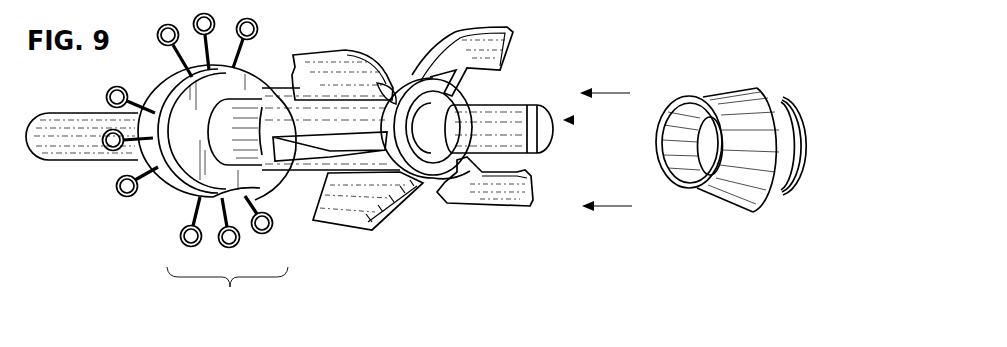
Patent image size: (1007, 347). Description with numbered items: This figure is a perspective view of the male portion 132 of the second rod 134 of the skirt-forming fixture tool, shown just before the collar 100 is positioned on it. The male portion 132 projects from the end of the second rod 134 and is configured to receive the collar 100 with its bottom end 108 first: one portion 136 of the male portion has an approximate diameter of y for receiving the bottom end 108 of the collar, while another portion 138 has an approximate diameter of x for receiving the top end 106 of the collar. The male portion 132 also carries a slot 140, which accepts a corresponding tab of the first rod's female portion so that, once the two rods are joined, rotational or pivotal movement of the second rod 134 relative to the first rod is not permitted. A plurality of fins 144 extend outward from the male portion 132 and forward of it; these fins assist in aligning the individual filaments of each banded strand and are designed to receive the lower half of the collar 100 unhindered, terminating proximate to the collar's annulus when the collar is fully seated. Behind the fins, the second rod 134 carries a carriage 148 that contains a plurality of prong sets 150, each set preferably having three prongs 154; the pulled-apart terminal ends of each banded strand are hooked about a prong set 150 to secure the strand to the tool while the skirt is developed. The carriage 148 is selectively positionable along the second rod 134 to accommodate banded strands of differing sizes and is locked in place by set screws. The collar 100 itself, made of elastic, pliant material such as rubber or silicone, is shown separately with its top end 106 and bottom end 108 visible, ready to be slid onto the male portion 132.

The collar 100 is at (745, 157).
The top end 106 is at (812, 175).
The bottom end 108 is at (670, 100).
The male portion 132 is at (576, 119).
The second rod 134 is at (72, 162).
The portion having an approximate diameter of y 136 is at (423, 98).
The portion having an approximate diameter of x 138 is at (478, 97).
The slot 140 is at (545, 148).
The fins 144 is at (467, 30).
The carriage 148 is at (175, 195).
The prong sets 150 is at (227, 292).
The prongs 154 is at (180, 233).